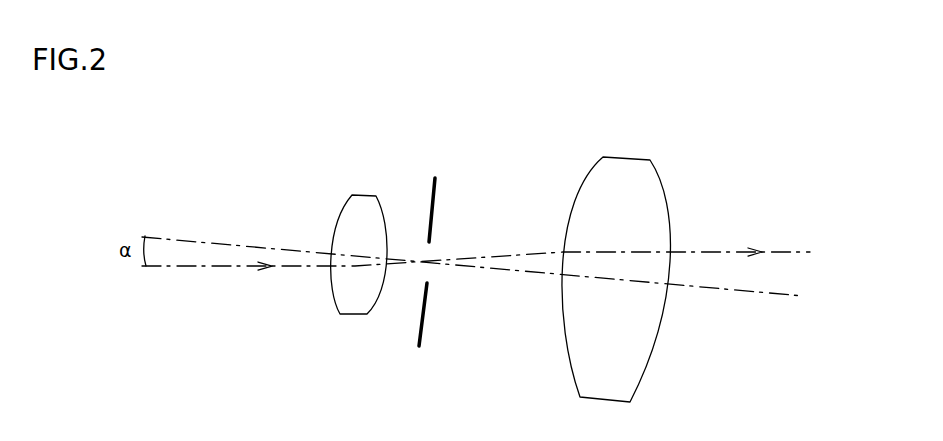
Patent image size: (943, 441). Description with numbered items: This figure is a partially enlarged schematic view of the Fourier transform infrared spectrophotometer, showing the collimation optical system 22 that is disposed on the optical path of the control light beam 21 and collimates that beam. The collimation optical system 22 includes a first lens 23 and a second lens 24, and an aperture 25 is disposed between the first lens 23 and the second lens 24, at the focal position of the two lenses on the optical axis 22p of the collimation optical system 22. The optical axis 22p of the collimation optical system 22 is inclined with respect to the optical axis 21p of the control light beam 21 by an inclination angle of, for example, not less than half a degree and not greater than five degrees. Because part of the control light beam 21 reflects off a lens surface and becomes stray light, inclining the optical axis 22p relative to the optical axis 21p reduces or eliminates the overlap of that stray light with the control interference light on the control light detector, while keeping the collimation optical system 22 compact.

The control light beam 21 is at (476, 288).
The optical axis of control light beam 21p is at (228, 270).
The collimation optical system 22 is at (554, 242).
The optical axis of collimation optical system 22p is at (228, 243).
The first lens 23 is at (360, 193).
The second lens 24 is at (625, 155).
The aperture 25 is at (419, 346).